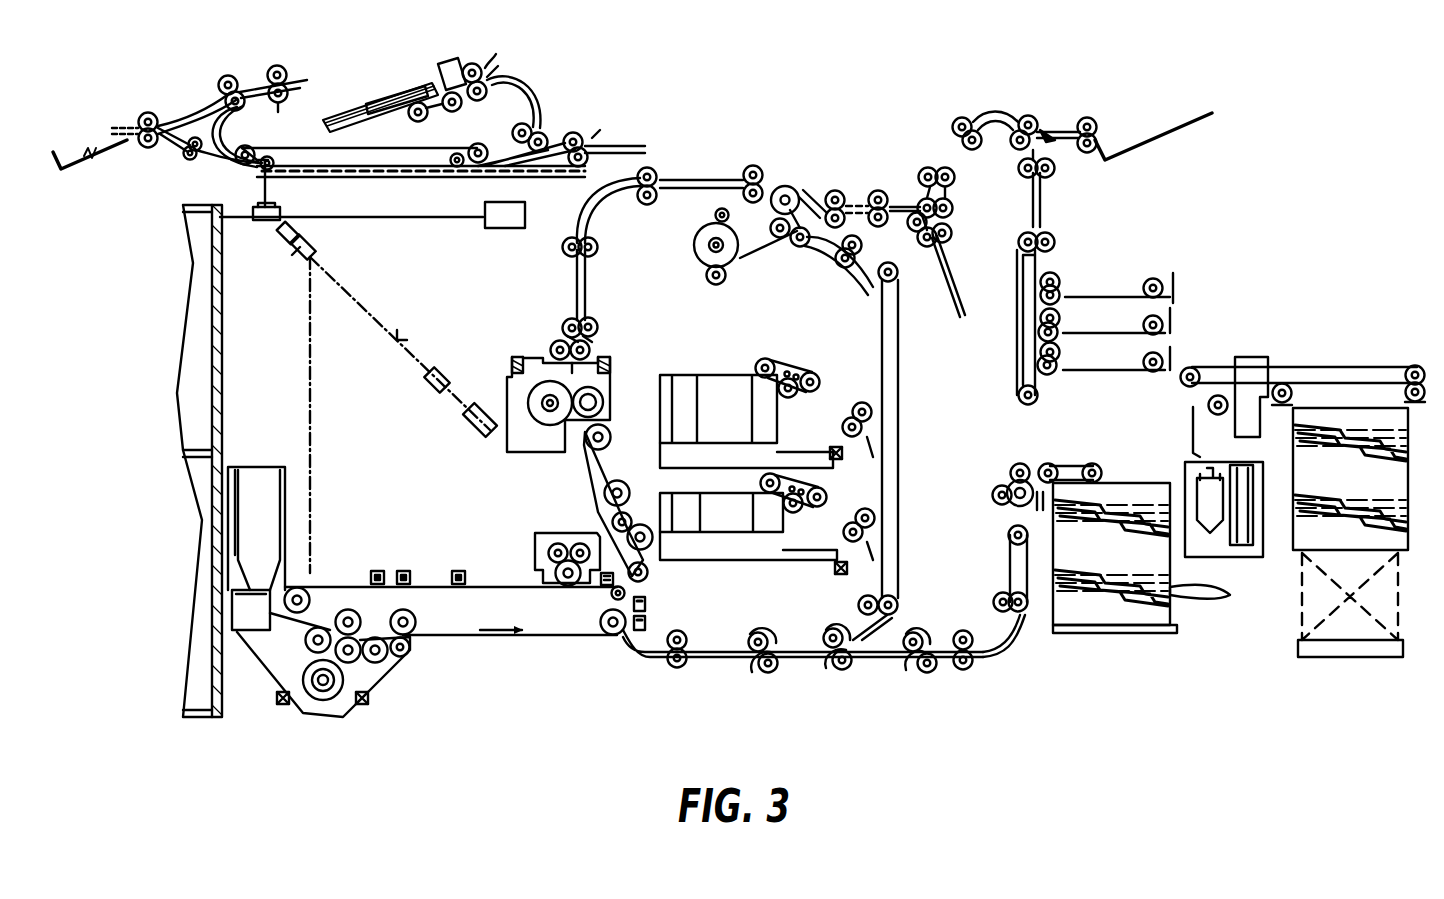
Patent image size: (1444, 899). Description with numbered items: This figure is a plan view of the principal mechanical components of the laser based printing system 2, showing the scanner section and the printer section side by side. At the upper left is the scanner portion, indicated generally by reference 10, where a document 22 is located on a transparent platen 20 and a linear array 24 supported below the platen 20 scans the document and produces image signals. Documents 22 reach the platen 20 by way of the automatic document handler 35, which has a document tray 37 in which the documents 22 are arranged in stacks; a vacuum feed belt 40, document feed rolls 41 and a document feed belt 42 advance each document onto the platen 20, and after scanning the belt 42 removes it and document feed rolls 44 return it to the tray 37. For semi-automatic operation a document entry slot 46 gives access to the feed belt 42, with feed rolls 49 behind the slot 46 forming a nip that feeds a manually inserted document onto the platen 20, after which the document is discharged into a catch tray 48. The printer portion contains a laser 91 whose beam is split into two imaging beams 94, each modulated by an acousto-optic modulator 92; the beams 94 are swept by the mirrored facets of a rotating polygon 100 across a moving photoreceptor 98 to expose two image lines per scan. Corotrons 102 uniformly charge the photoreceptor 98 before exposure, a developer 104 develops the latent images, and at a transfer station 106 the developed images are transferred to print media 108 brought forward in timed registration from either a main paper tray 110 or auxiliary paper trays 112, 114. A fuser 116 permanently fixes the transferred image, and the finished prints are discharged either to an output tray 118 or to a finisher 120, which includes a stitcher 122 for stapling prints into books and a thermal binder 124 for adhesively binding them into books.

The printing system 2 is at (770, 92).
The input feeding station 10 is at (175, 96).
The transparent platen 20 is at (417, 177).
The document 22 is at (373, 100).
The linear array 24 is at (257, 206).
The automatic document handler 35 is at (383, 76).
The document tray 37 is at (365, 118).
The vacuum feed belt 40 is at (465, 112).
The document feed rolls 41 is at (487, 66).
The document feed belt 42 is at (425, 147).
The document feed rolls 44 is at (275, 110).
The document entry slot 46 is at (604, 137).
The catch tray 48 is at (115, 152).
The feed rolls 49 is at (576, 131).
The laser 91 is at (473, 430).
The acousto-optic modulator 92 is at (443, 373).
The imaging beams 94 is at (400, 340).
The photoreceptor 98 is at (490, 584).
The rotating polygon 100 is at (306, 257).
The corotrons 102 is at (458, 572).
The developer 104 is at (392, 673).
The transfer station 106 is at (608, 658).
The print media 108 is at (1228, 536).
The main paper tray 110 is at (1093, 633).
The auxiliary paper tray 112 is at (713, 563).
The auxiliary paper tray 114 is at (713, 378).
The fuser 116 is at (622, 386).
The output tray 118 is at (1188, 130).
The finisher 120 is at (1228, 300).
The stitcher 122 is at (1170, 310).
The thermal binder 124 is at (1327, 357).